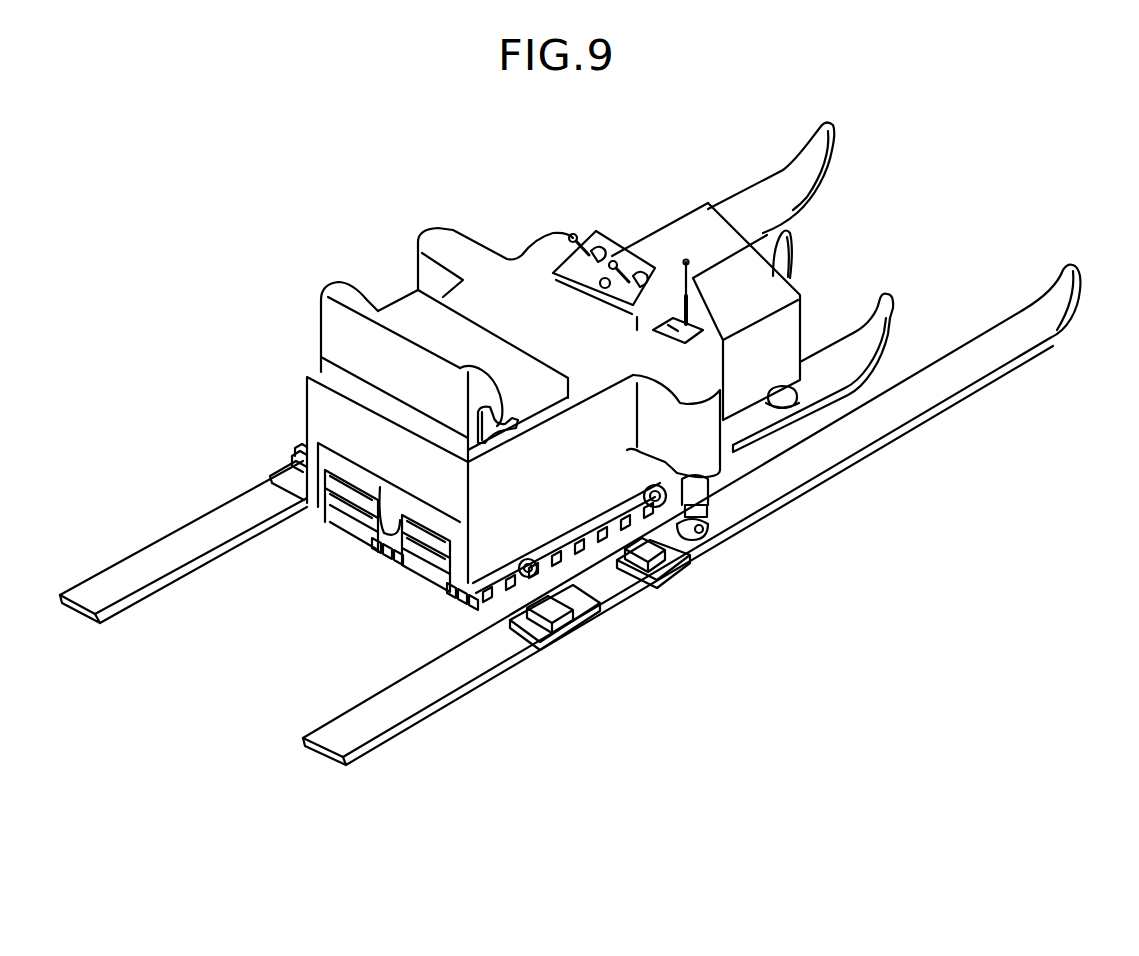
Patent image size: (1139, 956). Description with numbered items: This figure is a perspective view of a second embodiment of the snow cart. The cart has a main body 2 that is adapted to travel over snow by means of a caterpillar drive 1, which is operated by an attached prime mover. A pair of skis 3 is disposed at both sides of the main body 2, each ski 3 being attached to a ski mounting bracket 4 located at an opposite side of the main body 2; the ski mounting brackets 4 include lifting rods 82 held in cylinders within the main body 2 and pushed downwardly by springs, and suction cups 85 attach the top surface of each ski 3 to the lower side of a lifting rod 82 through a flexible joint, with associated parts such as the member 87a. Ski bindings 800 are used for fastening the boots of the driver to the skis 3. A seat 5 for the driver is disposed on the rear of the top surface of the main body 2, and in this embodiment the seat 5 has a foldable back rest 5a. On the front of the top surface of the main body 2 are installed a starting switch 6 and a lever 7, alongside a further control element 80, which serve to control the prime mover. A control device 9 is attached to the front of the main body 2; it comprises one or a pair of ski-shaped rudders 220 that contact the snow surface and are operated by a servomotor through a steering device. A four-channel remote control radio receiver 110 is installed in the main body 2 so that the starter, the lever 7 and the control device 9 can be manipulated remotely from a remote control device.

The caterpillar drive 1 is at (357, 543).
The main body 2 is at (563, 301).
The ski 3 is at (772, 194).
The ski mounting bracket 4 is at (631, 397).
The seat 5 is at (375, 323).
The foldable back rest 5a is at (340, 318).
The starting switch 6 is at (600, 286).
The brake lever 7 is at (577, 234).
The control device 9 is at (838, 268).
The switch lever 80 is at (618, 261).
The lifting rod 82 is at (698, 491).
The suction cup 85 is at (712, 541).
The collar 87a is at (706, 510).
The remote control radio receiver 110 is at (658, 326).
The ski-shaped rudder 220 is at (880, 330).
The ski binding 800 is at (662, 585).